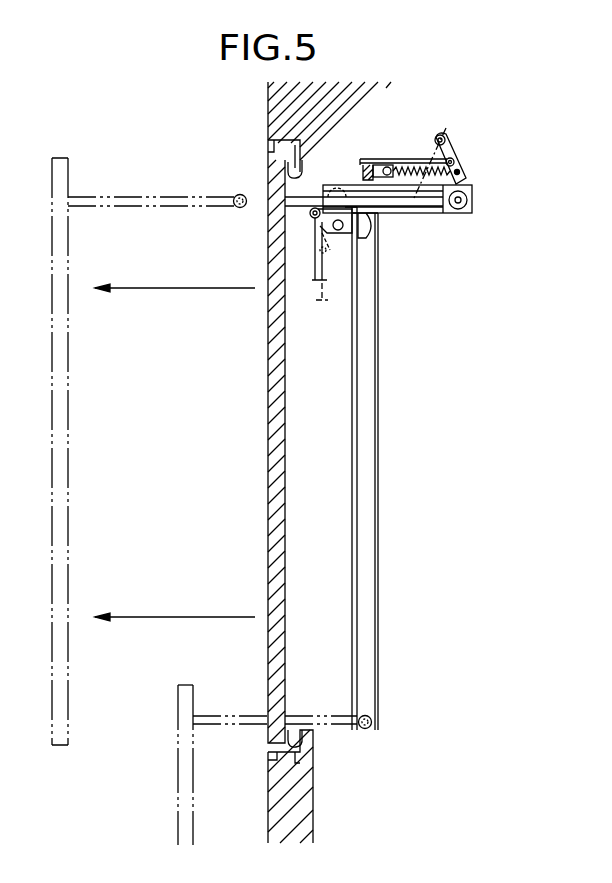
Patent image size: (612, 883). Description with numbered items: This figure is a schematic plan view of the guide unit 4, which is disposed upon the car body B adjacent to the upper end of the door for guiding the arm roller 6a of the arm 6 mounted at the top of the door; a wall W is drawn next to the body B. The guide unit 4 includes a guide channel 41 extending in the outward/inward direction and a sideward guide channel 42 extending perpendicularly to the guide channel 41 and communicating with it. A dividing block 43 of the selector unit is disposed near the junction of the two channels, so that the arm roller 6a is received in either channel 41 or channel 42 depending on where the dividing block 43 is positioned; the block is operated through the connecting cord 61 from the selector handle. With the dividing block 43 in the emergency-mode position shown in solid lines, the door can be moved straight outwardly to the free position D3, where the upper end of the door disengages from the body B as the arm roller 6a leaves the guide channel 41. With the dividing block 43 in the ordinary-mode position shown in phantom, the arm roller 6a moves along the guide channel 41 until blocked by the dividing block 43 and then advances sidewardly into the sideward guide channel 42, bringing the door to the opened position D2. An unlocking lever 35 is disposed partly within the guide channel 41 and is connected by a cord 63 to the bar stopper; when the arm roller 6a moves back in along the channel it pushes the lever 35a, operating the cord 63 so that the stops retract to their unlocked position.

The guide unit 4 is at (419, 468).
The arm 6 is at (155, 197).
The arm roller 6a is at (470, 203).
The unlocking lever 35 is at (456, 141).
The lever 35a is at (461, 172).
The guide channel 41 is at (438, 213).
The sideward guide channel 42 is at (381, 465).
The dividing block 43 is at (376, 222).
The connecting cord 61 is at (313, 262).
The cord 63 is at (378, 159).
The car body B is at (313, 816).
The opened position D2 is at (178, 762).
The free position D3 is at (68, 400).
The wall W is at (329, 412).